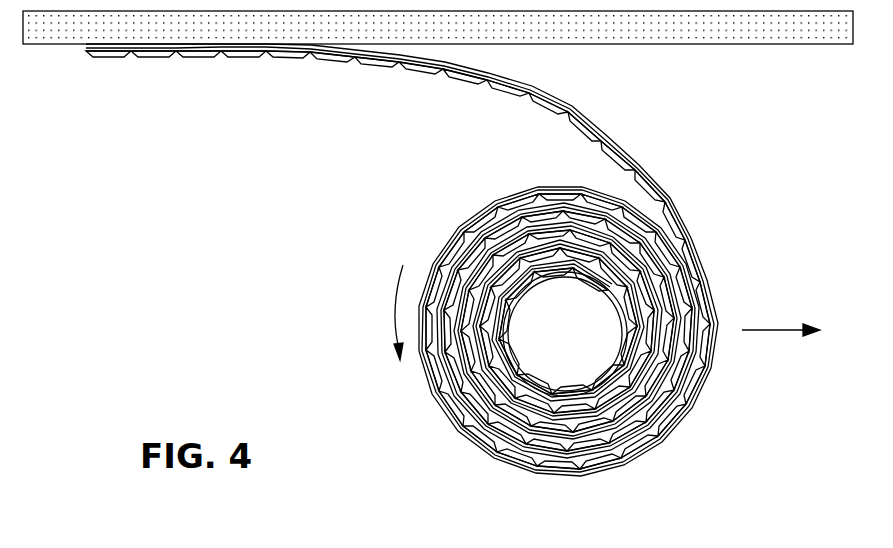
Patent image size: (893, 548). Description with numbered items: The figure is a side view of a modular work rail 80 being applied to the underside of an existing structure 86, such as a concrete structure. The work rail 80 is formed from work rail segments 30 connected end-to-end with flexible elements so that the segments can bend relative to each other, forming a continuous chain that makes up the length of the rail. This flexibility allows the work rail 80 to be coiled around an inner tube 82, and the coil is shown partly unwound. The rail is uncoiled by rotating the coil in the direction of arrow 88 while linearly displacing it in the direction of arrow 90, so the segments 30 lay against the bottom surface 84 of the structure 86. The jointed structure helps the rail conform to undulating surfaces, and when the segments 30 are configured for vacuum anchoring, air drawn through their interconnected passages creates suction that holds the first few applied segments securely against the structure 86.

The work rail segment 30 is at (200, 57).
The modular work rail 80 is at (722, 183).
The inner tube 82 is at (601, 290).
The bottom surface 84 is at (660, 45).
The existing structure 86 is at (773, 30).
The arrow 88 is at (392, 314).
The arrow 90 is at (773, 333).